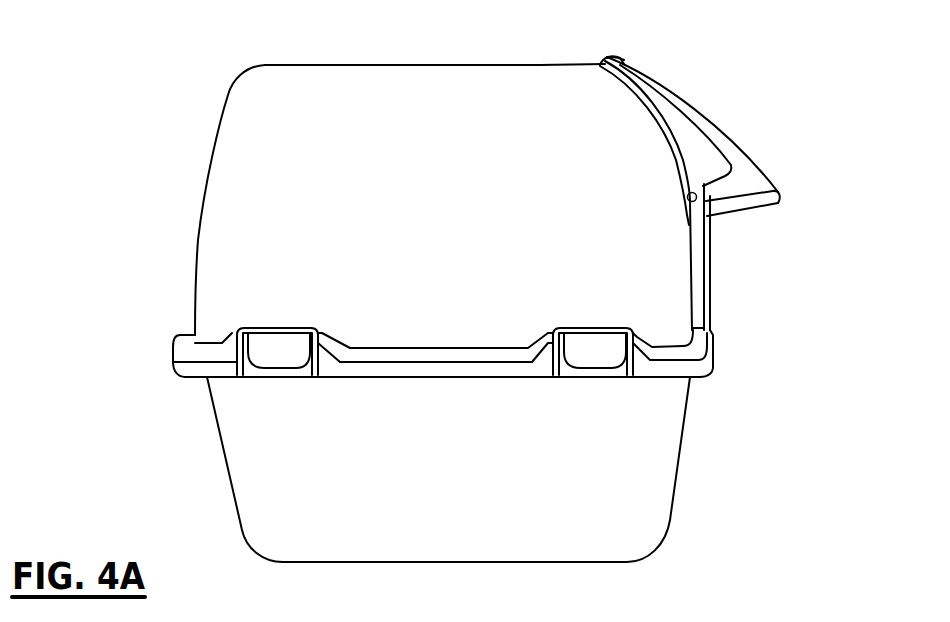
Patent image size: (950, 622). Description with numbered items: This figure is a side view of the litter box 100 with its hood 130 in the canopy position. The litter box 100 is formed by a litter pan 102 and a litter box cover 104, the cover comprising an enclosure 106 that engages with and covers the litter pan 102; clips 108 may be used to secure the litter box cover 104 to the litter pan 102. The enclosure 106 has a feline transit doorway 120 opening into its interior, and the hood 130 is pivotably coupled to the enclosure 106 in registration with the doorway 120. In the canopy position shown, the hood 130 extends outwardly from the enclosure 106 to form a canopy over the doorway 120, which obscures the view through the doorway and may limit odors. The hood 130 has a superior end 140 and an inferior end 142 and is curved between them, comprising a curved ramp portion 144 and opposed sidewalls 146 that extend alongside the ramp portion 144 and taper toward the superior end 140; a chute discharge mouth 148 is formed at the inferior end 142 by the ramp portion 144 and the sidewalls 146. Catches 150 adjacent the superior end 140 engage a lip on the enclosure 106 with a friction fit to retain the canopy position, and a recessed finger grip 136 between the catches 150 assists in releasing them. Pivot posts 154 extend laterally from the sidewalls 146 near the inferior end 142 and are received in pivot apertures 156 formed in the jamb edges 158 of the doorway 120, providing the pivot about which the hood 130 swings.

The litter box 100 is at (110, 197).
The litter pan 102 is at (215, 478).
The litter box cover 104 is at (182, 292).
The enclosure 106 is at (208, 161).
The clips 108 is at (588, 355).
The feline transit doorway 120 is at (717, 297).
The hood 130 is at (768, 157).
The recessed finger grip 136 is at (622, 55).
The superior end 140 is at (623, 64).
The inferior end 142 is at (773, 202).
The curved ramp portion 144 is at (740, 133).
The sidewalls 146 is at (748, 178).
The chute discharge mouth 148 is at (737, 227).
The catches 150 is at (595, 60).
The pivot posts 154 is at (686, 196).
The pivot apertures 156 is at (693, 208).
The jamb edges 158 is at (702, 313).